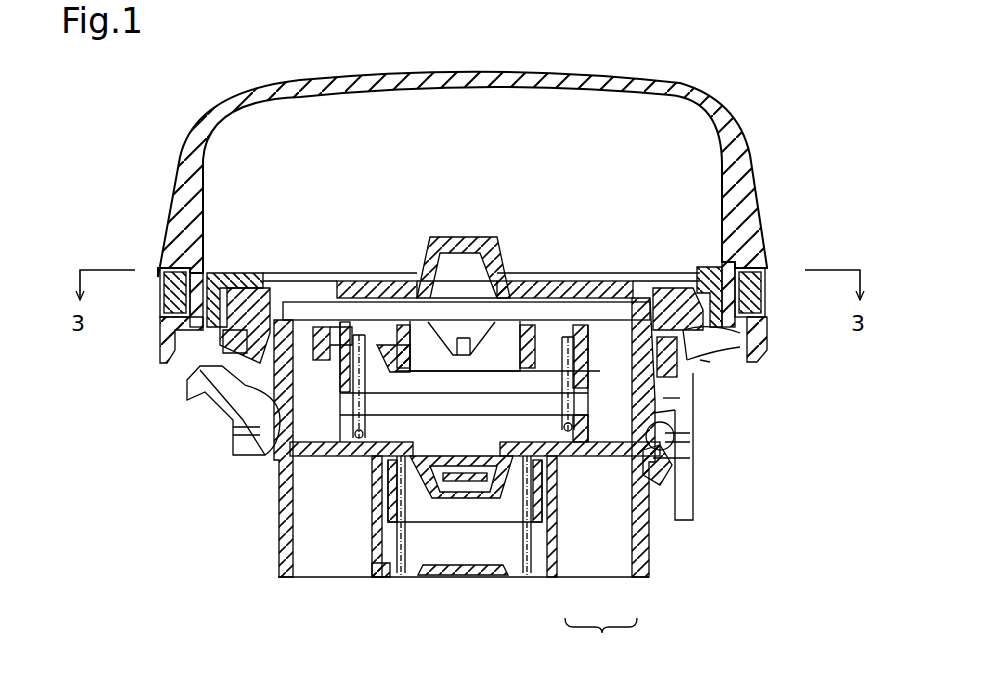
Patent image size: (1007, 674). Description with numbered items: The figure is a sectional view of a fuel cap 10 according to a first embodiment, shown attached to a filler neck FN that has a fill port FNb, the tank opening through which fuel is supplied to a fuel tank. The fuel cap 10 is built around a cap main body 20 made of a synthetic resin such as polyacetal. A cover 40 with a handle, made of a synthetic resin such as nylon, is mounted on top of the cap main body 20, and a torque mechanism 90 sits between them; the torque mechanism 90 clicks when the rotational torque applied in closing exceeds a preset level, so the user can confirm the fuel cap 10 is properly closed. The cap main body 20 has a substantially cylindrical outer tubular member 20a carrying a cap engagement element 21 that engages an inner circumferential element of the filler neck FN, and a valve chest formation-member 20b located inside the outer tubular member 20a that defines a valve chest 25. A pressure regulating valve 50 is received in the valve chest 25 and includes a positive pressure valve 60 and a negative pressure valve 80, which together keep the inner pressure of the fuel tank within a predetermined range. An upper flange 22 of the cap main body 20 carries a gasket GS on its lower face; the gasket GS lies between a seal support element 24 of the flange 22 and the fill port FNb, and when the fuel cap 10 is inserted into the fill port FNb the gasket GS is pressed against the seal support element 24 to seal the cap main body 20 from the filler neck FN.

The fuel cap 10 is at (737, 32).
The cover 40 is at (717, 93).
The torque mechanism 90 is at (637, 276).
The cap main body 20 is at (347, 625).
The outer tubular member 20a is at (288, 517).
The valve chest formation-member 20b is at (370, 530).
The cap engagement element 21 is at (275, 460).
The upper flange 22 is at (700, 326).
The seal support element 24 is at (700, 350).
The gasket GS is at (703, 362).
The fill port FNb is at (663, 398).
The filler neck FN is at (653, 458).
The valve chest 25 is at (538, 535).
The pressure regulating valve 50 is at (601, 636).
The positive pressure valve 60 is at (597, 467).
The negative pressure valve 80 is at (550, 507).